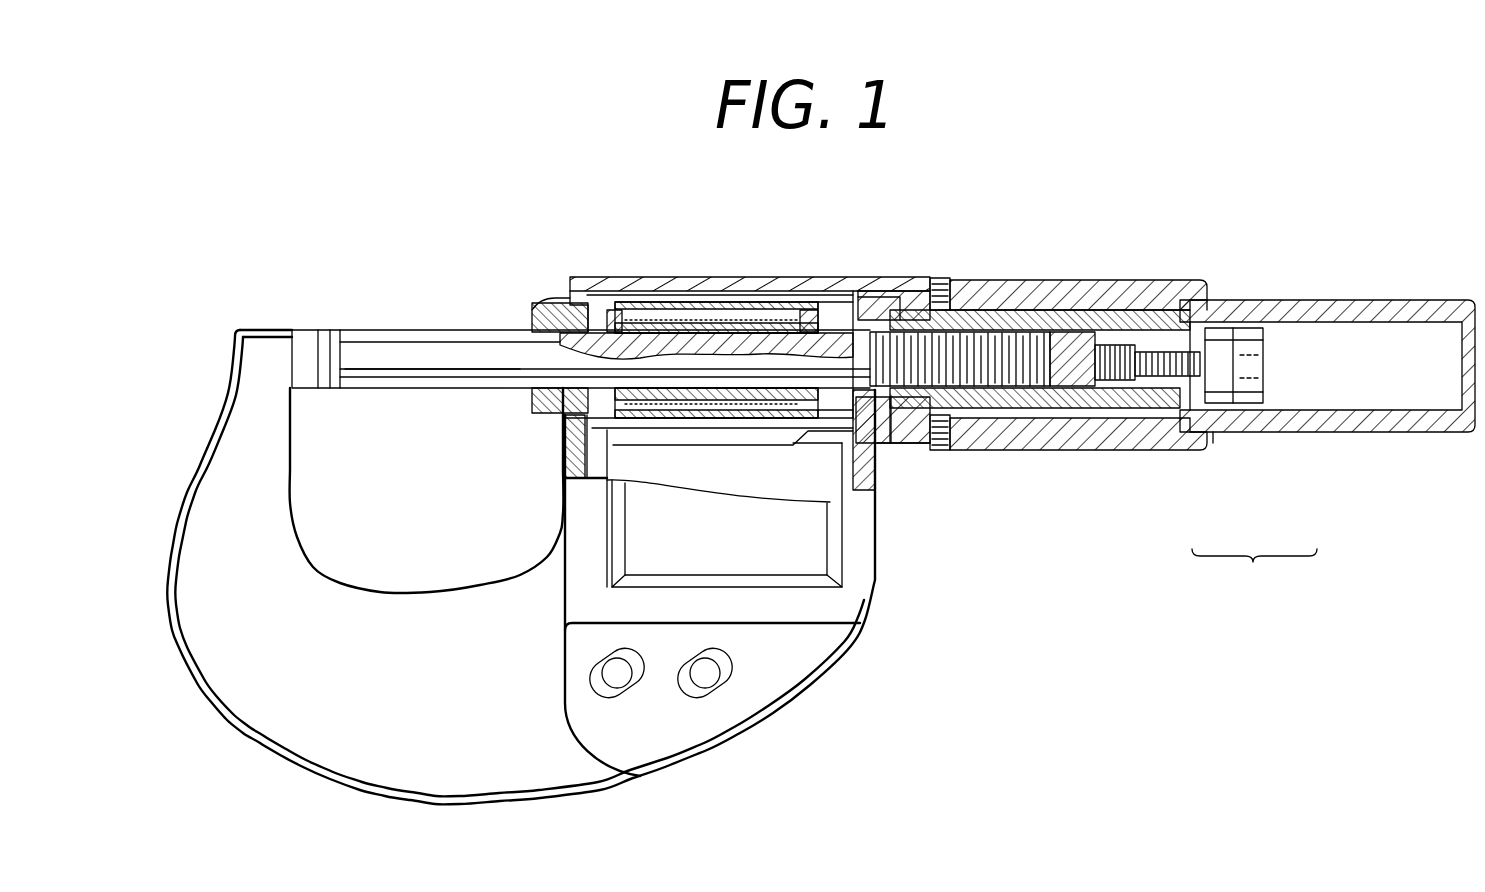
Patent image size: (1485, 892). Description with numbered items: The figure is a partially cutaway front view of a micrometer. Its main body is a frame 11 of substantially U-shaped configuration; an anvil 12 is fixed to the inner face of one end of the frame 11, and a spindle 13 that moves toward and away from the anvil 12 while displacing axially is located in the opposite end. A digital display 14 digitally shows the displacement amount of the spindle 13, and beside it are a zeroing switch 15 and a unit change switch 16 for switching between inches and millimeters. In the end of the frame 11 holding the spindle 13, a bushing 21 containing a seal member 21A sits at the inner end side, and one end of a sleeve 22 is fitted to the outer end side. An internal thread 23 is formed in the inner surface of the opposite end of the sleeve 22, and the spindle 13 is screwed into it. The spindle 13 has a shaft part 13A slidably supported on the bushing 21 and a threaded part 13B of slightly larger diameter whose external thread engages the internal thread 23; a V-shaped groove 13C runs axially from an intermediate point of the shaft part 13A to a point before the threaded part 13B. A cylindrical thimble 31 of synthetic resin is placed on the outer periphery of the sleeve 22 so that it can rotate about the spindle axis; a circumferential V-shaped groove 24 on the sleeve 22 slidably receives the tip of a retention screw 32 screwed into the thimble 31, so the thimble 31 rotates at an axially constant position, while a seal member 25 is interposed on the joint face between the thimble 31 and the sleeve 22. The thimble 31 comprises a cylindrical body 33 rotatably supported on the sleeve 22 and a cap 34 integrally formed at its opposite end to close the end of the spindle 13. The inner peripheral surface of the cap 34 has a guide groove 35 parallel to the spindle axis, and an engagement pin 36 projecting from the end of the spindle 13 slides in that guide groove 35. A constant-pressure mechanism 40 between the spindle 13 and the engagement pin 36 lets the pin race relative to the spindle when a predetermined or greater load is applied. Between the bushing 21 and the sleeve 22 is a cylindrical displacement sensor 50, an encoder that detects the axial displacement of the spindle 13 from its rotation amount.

The frame 11 is at (443, 772).
The anvil 12 is at (303, 337).
The spindle 13 is at (373, 335).
The shaft part 13A is at (413, 377).
The threaded part 13B is at (1040, 437).
The V-shaped groove 13C is at (537, 343).
The digital display 14 is at (793, 550).
The zeroing switch 15 is at (630, 690).
The unit change switch 16 is at (713, 690).
The bushing 21 is at (570, 300).
The seal member 21A is at (542, 303).
The sleeve 22 is at (877, 290).
The internal thread 23 is at (1120, 330).
The V-shaped groove 24 is at (975, 447).
The seal member 25 is at (920, 307).
The thimble 31 is at (1254, 575).
The retention screw 32 is at (950, 272).
The cylindrical body 33 is at (1192, 450).
The cap 34 is at (1300, 443).
The guide groove 35 is at (1397, 322).
The engagement pin 36 is at (1250, 327).
The constant-pressure mechanism 40 is at (1265, 357).
The cylindrical displacement sensor 50 is at (740, 270).